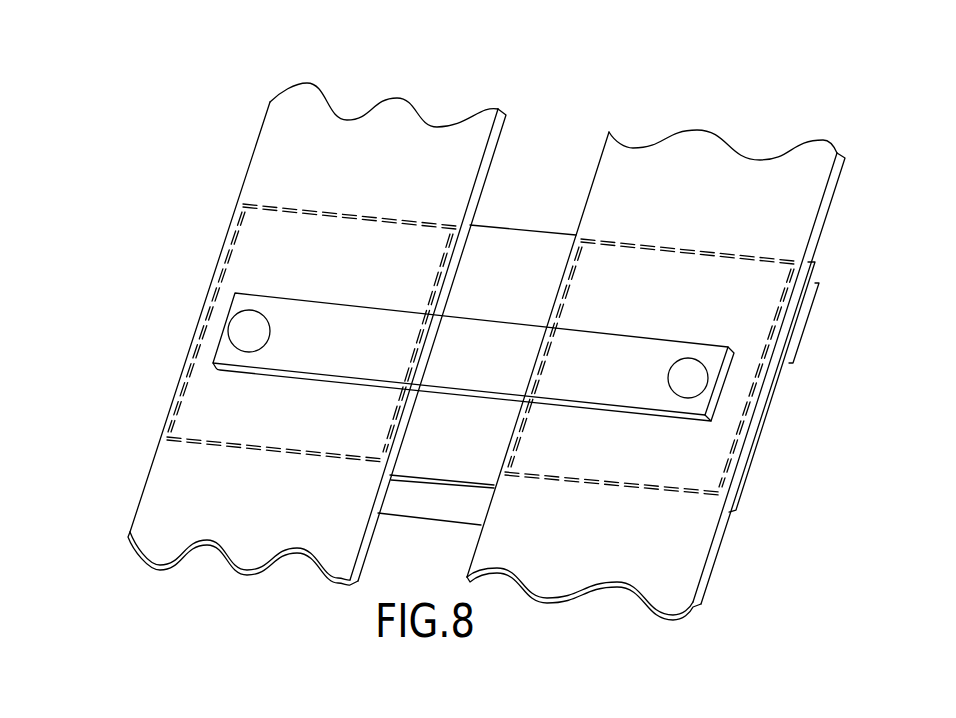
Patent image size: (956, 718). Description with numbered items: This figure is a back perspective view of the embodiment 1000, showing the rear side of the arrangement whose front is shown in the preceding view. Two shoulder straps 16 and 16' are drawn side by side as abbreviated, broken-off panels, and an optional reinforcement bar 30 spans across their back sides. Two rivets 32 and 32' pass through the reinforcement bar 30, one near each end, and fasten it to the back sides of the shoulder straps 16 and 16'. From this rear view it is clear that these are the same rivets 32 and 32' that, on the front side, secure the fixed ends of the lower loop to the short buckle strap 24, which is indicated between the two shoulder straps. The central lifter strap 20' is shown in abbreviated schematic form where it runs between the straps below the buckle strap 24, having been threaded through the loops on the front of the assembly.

The embodiment 1000 is at (472, 324).
The shoulder strap 16' is at (317, 319).
The shoulder strap 16 is at (656, 353).
The short buckle strap 24 is at (507, 240).
The central lifter strap 20' is at (436, 522).
The reinforcement bar 30 is at (310, 345).
The rivet 32' is at (165, 321).
The rivet 32 is at (776, 381).